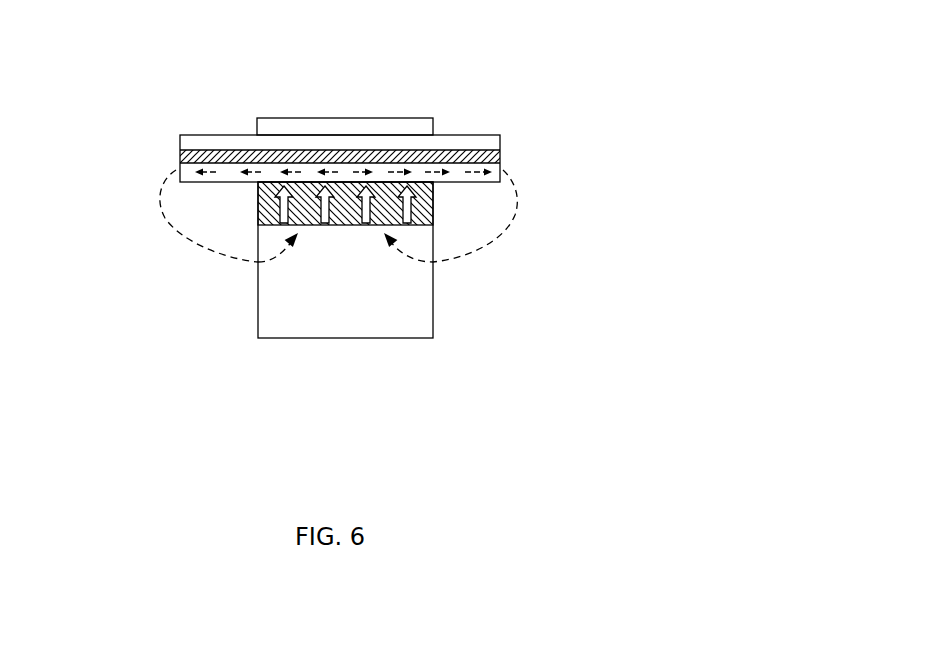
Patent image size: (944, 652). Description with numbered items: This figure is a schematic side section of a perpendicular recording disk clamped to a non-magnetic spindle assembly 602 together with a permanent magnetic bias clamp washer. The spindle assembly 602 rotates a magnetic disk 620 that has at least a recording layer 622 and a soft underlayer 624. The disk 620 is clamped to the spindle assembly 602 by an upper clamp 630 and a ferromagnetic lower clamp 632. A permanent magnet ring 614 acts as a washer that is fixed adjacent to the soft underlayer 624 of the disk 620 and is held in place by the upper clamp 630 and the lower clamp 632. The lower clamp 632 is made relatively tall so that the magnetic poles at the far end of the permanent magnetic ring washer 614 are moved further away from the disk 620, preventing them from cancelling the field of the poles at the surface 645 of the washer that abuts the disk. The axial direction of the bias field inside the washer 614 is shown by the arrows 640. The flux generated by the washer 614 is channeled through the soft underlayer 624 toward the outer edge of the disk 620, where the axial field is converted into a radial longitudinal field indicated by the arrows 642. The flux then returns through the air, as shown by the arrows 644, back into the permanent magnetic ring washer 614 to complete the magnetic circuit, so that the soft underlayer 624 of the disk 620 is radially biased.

The non-magnetic spindle assembly 602 is at (424, 362).
The permanent magnet ring 614 is at (455, 203).
The magnetic disk 620 is at (500, 113).
The recording layer 622 is at (500, 150).
The soft underlayer 624 is at (500, 172).
The upper clamp 630 is at (337, 118).
The ferromagnetic lower clamp 632 is at (320, 330).
The arrows 640 is at (335, 225).
The arrows 642 is at (242, 160).
The arrows 644 is at (205, 248).
The surface 645 is at (257, 185).